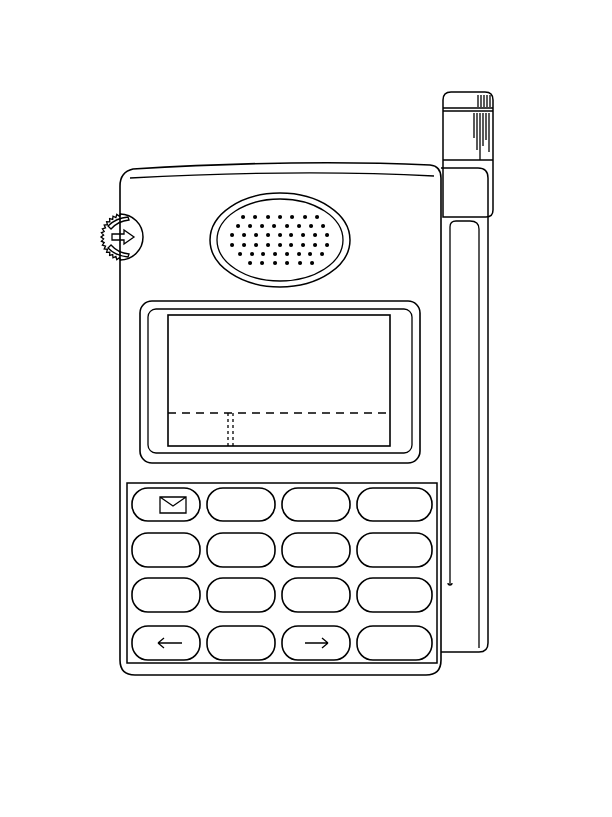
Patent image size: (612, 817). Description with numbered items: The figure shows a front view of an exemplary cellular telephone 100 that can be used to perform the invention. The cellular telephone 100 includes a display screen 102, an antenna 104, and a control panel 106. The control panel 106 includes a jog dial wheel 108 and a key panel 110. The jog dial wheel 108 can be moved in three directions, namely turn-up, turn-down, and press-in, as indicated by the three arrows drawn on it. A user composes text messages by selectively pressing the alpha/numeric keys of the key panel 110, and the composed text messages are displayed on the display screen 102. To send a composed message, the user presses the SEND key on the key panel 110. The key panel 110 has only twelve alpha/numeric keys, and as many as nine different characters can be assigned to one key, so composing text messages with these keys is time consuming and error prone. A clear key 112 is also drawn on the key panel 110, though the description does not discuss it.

The cellular telephone 100 is at (180, 115).
The display screen 102 is at (168, 361).
The antenna 104 is at (494, 127).
The control panel 106 is at (163, 280).
The jog dial wheel 108 is at (106, 250).
The key panel 110 is at (437, 492).
The clear key 112 is at (425, 548).